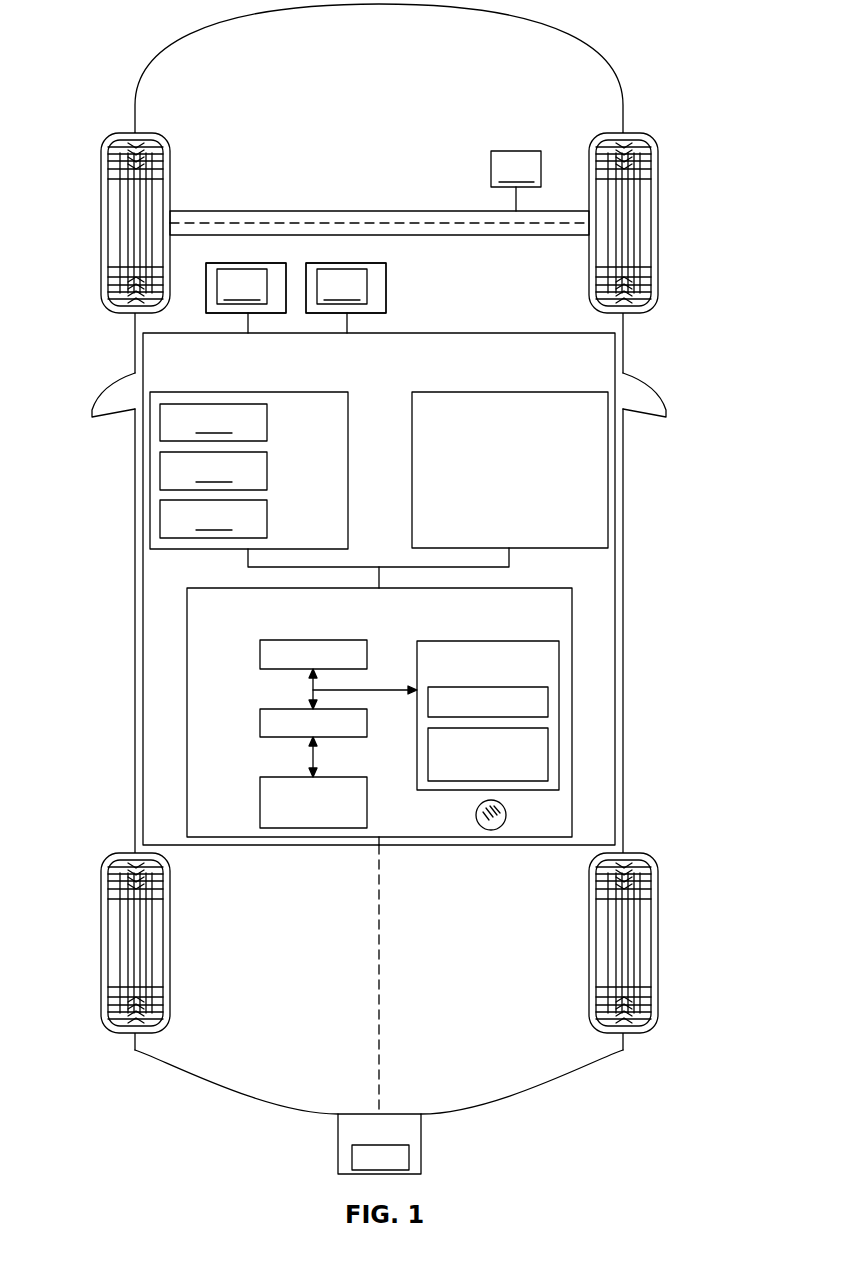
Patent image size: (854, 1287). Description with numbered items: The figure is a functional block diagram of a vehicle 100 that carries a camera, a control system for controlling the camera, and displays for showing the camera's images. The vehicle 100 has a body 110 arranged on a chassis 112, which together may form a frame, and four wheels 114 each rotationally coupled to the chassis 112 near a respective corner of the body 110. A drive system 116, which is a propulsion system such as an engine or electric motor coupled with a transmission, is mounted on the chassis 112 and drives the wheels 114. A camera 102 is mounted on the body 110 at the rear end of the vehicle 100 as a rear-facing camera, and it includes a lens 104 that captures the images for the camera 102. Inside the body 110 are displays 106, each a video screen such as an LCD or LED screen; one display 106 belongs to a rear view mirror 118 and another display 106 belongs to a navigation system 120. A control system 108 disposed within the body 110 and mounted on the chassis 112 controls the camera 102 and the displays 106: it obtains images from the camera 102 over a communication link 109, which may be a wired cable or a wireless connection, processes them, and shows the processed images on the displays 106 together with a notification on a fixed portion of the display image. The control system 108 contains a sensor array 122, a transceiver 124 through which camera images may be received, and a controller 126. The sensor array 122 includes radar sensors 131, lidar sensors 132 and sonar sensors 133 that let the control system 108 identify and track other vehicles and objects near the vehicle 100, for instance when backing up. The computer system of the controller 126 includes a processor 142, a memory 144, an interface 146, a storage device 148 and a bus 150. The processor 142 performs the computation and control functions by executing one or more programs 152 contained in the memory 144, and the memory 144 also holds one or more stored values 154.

The vehicle 100 is at (115, 31).
The camera 102 is at (338, 1150).
The lens 104 is at (409, 1155).
The display 106 is at (296, 298).
The control system 108 is at (530, 333).
The communication link 109 is at (381, 990).
The body 110 is at (150, 568).
The chassis 112 is at (349, 213).
The wheels 114 is at (101, 223).
The drive system 116 is at (516, 181).
The rear view mirror 118 is at (346, 263).
The navigation system 120 is at (246, 263).
The sensor array 122 is at (213, 392).
The transceiver 124 is at (526, 392).
The controller 126 is at (508, 588).
The radar sensors 131 is at (213, 422).
The lidar sensors 132 is at (213, 471).
The sonar sensors 133 is at (213, 519).
The processor 142 is at (260, 650).
The memory 144 is at (497, 641).
The interface 146 is at (260, 725).
The storage device 148 is at (260, 805).
The bus 150 is at (310, 690).
The program 152 is at (548, 702).
The stored values 154 is at (548, 755).